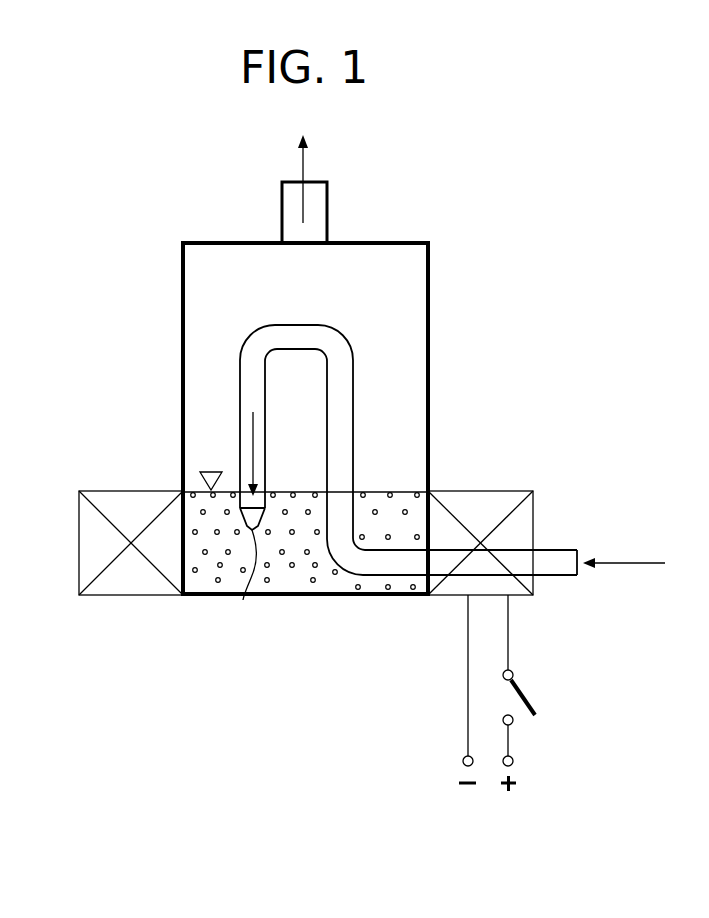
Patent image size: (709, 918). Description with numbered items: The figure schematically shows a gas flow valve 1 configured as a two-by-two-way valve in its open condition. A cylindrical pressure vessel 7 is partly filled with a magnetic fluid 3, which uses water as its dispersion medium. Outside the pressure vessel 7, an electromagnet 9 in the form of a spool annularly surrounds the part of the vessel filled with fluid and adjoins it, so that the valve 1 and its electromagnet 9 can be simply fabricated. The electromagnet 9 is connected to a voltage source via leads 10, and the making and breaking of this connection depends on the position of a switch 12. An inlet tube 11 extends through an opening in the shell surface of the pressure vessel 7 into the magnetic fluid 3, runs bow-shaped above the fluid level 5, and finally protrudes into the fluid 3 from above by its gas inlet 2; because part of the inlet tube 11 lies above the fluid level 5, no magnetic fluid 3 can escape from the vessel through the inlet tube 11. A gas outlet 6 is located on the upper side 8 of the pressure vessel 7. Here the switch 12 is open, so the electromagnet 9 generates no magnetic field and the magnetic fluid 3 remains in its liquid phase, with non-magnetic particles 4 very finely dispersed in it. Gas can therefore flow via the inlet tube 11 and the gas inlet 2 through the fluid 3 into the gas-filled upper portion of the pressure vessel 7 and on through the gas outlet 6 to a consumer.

The gas flow valve 1 is at (190, 228).
The gas inlet 2 is at (243, 600).
The magnetic fluid 3 is at (282, 567).
The non-magnetic particles 4 is at (218, 578).
The fluid level 5 is at (198, 484).
The gas outlet 6 is at (330, 200).
The pressure vessel 7 is at (430, 300).
The upper side 8 is at (263, 236).
The electromagnet 9 is at (123, 577).
The leads 10 is at (512, 634).
The inlet tube 11 is at (343, 413).
The switch 12 is at (533, 696).